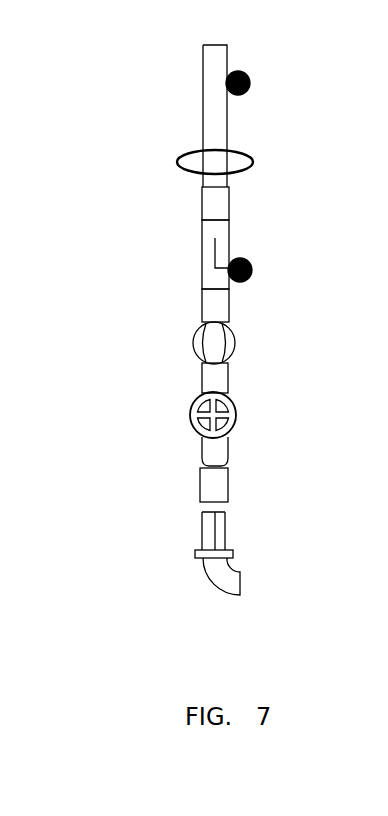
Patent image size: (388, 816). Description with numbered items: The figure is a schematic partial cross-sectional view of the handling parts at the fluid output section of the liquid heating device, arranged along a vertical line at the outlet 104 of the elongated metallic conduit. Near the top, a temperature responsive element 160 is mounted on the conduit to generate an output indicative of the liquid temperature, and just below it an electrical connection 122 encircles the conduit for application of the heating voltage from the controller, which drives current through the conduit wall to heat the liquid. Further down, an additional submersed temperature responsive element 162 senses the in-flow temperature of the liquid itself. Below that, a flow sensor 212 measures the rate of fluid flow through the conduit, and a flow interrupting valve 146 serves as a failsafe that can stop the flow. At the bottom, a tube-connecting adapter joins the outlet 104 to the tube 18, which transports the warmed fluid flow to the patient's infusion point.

The outlet 104 is at (135, 170).
The temperature responsive element 160 is at (250, 83).
The electrical connection 122 is at (253, 158).
The additional submersed temperature responsive element 162 is at (252, 266).
The flow sensor 212 is at (238, 344).
The flow interrupting valve 146 is at (238, 416).
The tube 18 is at (228, 530).